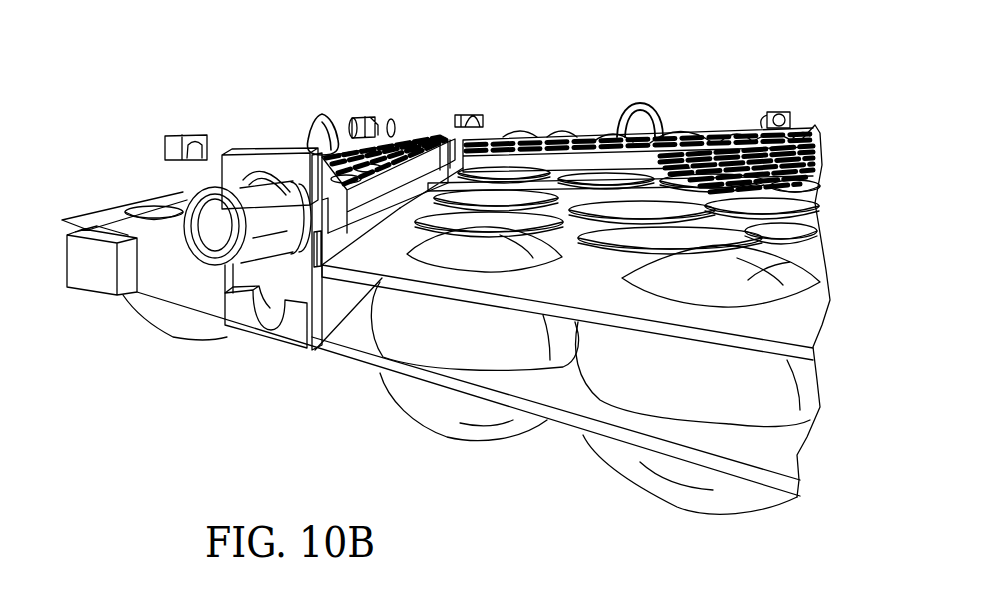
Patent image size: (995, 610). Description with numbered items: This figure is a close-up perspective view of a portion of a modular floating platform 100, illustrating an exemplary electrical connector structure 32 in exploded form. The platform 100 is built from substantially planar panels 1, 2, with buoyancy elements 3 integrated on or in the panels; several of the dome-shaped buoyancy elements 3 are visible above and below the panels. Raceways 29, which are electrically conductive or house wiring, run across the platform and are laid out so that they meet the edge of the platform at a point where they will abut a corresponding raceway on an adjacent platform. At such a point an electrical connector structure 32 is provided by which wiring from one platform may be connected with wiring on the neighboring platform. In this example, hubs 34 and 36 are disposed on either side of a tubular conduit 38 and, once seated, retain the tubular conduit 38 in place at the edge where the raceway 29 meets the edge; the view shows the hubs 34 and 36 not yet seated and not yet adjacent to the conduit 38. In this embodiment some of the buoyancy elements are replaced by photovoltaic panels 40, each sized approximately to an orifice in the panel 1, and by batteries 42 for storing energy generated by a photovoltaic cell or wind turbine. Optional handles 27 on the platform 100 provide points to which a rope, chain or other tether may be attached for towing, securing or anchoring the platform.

The modular floating platform 100 is at (143, 152).
The planar panel 1 is at (737, 320).
The planar panel 2 is at (567, 400).
The buoyancy element 3 is at (818, 274).
The handle 27 is at (642, 102).
The raceway 29 is at (418, 170).
The electrical connector structure 32 is at (238, 138).
The hub 34 is at (175, 133).
The hub 36 is at (246, 330).
The tubular conduit 38 is at (257, 238).
The photovoltaic panel 40 is at (657, 211).
The battery 42 is at (695, 240).